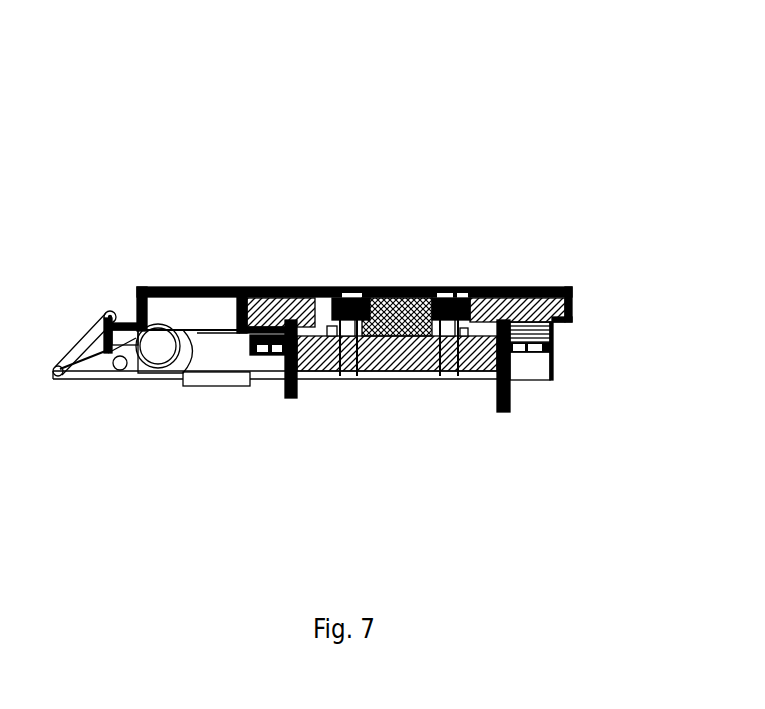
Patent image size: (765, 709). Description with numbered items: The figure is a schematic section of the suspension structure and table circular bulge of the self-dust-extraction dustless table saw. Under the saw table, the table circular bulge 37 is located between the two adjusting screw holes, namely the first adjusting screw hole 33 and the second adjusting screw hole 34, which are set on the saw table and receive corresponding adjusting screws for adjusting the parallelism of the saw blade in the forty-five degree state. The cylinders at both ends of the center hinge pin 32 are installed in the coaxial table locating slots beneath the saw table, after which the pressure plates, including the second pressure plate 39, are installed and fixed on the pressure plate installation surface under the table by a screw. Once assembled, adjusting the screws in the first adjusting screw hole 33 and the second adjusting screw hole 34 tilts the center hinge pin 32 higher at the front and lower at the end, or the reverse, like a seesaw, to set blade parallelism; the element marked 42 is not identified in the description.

The center hinge pin 32 is at (288, 383).
The first adjusting screw hole 33 is at (333, 293).
The second adjusting screw hole 34 is at (457, 290).
The table circular bulge 37 is at (405, 293).
The second pressure plate 39 is at (555, 347).
The mounting seat 42 is at (530, 357).